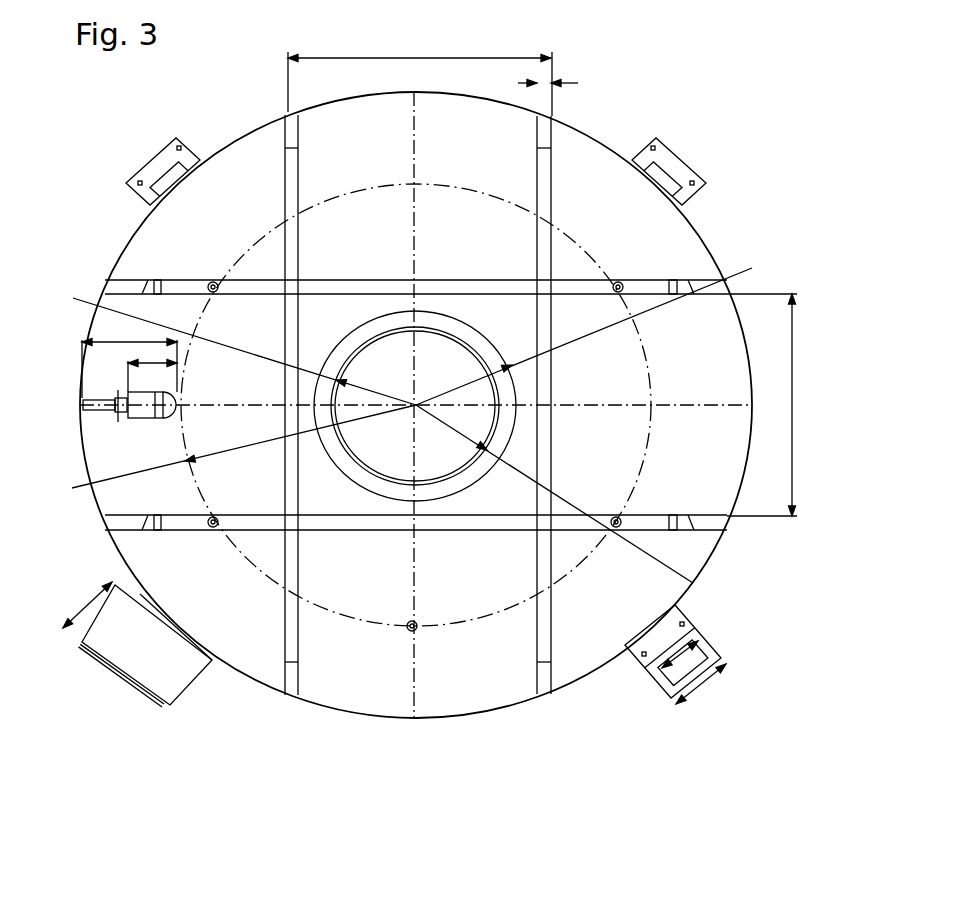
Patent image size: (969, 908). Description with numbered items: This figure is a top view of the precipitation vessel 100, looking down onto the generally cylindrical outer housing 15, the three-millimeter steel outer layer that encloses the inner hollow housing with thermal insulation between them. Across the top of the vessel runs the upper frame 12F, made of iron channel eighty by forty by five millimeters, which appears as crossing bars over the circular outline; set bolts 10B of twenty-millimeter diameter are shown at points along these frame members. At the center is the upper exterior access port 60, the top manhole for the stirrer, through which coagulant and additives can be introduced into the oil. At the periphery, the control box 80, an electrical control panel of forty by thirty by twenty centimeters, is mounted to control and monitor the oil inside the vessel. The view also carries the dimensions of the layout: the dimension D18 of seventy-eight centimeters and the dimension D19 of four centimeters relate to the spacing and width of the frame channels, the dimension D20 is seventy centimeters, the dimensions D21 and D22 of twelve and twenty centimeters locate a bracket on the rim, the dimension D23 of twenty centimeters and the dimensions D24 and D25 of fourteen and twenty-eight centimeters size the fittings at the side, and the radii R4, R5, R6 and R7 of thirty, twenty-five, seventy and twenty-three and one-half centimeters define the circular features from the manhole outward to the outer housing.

The set bolt 10B is at (208, 283).
The upper frame 12F is at (652, 283).
The outer housing 15 is at (497, 707).
The upper exterior access port 60 is at (447, 355).
The control box 80 is at (143, 657).
The precipitation vessel 100 is at (518, 820).
The dimension D18 is at (490, 58).
The dimension D19 is at (569, 83).
The dimension D20 is at (792, 357).
The dimension D21 is at (655, 680).
The dimension D22 is at (762, 730).
The dimension D23 is at (88, 596).
The dimension D24 is at (150, 364).
The dimension D25 is at (92, 340).
The radius R4 is at (752, 268).
The radius R5 is at (693, 583).
The radius R6 is at (72, 488).
The radius R7 is at (75, 298).